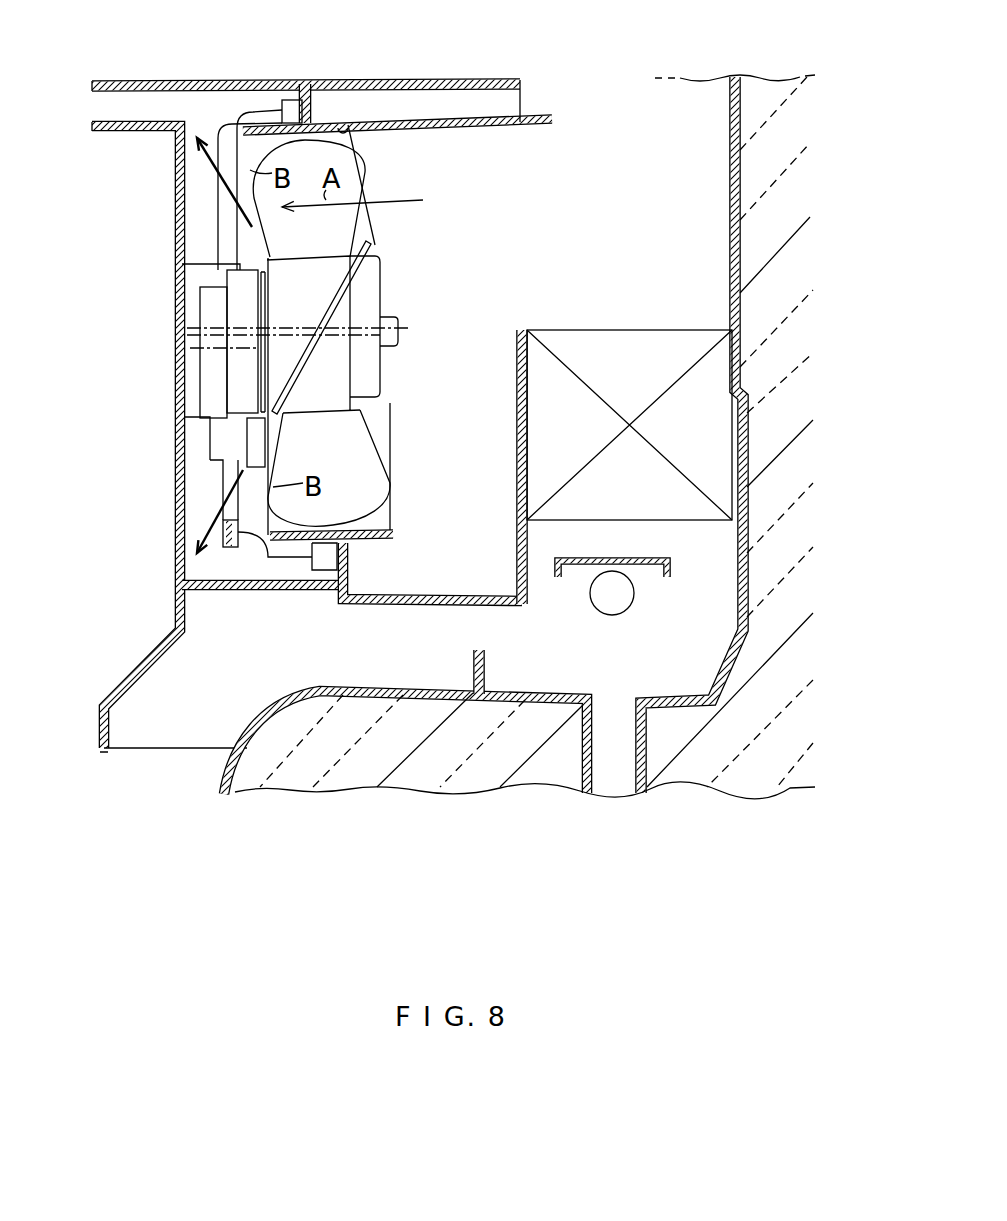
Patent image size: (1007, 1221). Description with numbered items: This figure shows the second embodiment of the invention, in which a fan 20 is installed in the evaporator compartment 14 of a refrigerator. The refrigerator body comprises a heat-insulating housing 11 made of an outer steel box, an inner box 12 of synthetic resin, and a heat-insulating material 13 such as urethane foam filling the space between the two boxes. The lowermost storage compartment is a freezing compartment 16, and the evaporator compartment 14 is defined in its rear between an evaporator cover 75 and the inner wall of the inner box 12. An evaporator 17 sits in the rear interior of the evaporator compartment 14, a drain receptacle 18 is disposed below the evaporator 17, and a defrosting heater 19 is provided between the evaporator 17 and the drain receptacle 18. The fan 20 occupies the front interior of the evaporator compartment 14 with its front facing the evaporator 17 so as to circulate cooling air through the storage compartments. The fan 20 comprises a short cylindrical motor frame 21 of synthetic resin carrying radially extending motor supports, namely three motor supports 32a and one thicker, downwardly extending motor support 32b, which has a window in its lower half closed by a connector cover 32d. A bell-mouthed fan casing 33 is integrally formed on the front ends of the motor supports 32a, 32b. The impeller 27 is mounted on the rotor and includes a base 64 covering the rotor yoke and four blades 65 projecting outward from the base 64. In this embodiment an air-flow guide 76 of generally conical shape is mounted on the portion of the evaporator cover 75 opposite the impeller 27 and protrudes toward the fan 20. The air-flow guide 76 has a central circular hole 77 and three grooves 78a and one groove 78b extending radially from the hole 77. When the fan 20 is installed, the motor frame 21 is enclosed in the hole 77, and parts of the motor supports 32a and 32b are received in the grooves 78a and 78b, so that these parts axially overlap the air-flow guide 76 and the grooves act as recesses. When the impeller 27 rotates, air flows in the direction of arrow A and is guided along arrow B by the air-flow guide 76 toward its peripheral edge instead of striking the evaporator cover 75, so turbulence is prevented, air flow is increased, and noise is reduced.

The heat-insulating housing 11 is at (803, 112).
The inner box 12 is at (730, 155).
The heat-insulating material 13 is at (783, 183).
The evaporator compartment 14 is at (680, 240).
The freezing compartment 16 is at (281, 437).
The evaporator 17 is at (695, 417).
The drain receptacle 18 is at (473, 660).
The defrosting heater 19 is at (630, 605).
The fan 20 is at (397, 180).
The motor frame 21 is at (212, 312).
The impeller 27 is at (373, 433).
The motor support 32a is at (235, 107).
The motor support 32b is at (247, 533).
The connector cover 32d is at (220, 483).
The fan casing 33 is at (348, 125).
The base 64 is at (343, 383).
The blade 65 is at (370, 487).
The evaporator cover 75 is at (175, 402).
The air-flow guide 76 is at (197, 167).
The central circular hole 77 is at (198, 267).
The groove 78a is at (202, 240).
The groove 78b is at (207, 473).